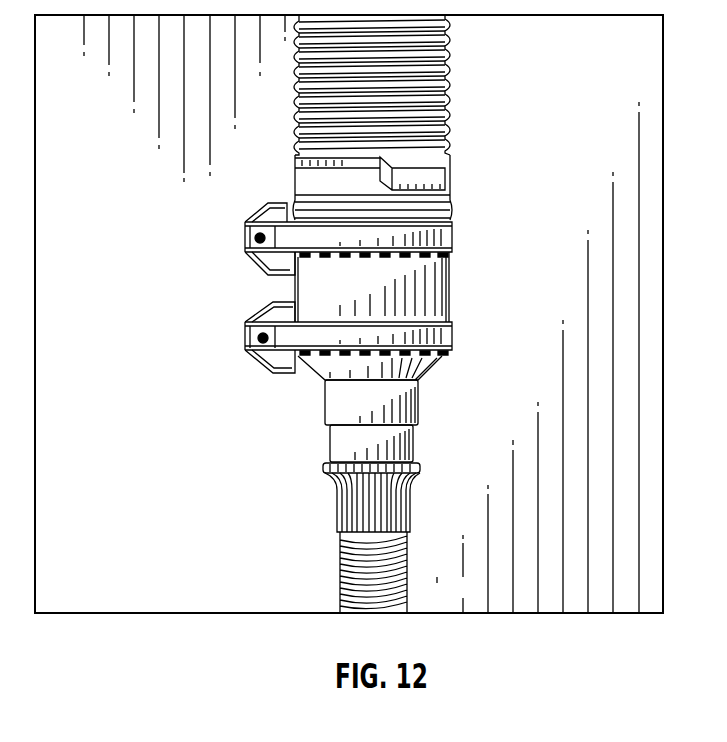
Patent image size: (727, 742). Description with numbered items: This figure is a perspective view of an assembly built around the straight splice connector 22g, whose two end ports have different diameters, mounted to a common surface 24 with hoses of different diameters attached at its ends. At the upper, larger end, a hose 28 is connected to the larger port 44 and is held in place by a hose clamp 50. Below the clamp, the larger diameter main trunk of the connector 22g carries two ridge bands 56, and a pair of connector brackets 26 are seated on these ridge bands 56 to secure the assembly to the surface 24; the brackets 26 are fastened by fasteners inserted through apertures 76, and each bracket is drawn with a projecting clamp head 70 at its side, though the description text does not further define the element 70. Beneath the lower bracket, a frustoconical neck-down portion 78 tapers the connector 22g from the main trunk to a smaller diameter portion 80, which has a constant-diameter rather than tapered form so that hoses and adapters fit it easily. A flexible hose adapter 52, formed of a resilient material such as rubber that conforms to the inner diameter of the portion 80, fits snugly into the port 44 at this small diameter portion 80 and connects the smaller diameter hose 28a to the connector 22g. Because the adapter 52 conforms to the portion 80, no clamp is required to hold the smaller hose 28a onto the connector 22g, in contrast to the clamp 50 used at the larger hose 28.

The surface 24 is at (530, 133).
The hose 28 is at (450, 55).
The smaller diameter hose 28a is at (401, 578).
The hose clamp 50 is at (294, 165).
The clamp housing 70 is at (262, 218).
The apertures 76 is at (248, 234).
The connector brackets 26 is at (452, 235).
The ridge bands 56 is at (440, 257).
The straight splice connector 22g is at (447, 288).
The frustoconical neck-down portion 78 is at (433, 361).
The smaller diameter portion 80 is at (413, 401).
The port 44 is at (331, 428).
The flexible hose adapter 52 is at (337, 453).